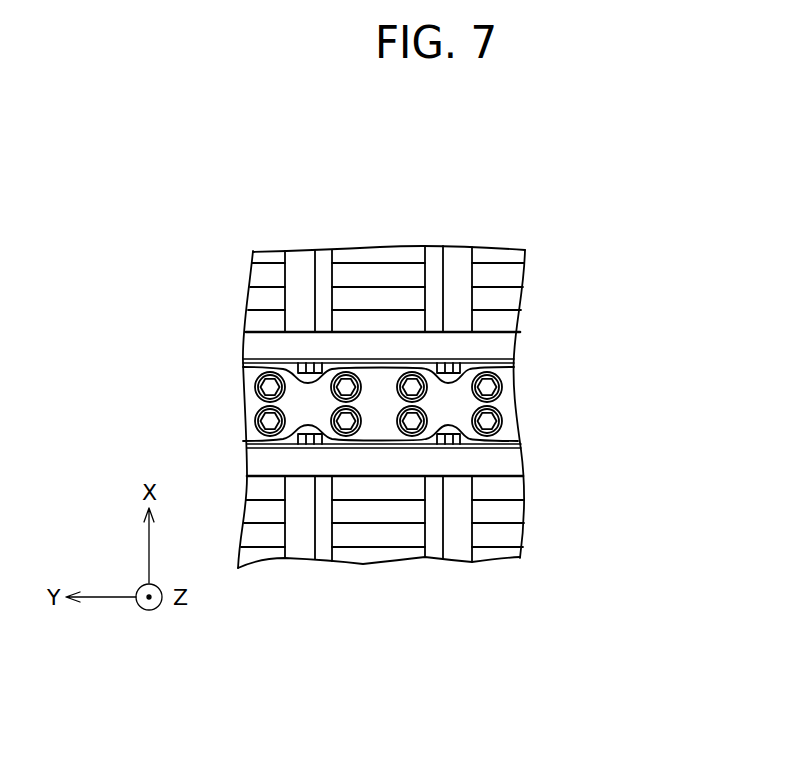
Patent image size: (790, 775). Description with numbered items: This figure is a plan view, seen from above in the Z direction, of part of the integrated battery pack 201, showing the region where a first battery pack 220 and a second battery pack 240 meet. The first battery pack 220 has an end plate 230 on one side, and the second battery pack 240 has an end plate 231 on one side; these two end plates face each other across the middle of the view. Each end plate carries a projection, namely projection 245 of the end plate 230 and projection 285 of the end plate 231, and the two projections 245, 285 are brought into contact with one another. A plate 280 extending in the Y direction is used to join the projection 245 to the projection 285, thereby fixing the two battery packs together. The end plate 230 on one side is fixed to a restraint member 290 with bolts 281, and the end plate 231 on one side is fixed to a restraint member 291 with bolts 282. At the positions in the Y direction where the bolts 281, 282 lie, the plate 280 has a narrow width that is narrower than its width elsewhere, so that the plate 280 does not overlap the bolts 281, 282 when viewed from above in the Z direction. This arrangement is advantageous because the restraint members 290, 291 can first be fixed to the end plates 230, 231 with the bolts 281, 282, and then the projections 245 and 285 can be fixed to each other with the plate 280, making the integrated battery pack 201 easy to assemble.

The integrated battery pack 201 is at (507, 237).
The second battery pack 240 is at (502, 277).
The first battery pack 220 is at (520, 528).
The restraint member 291 is at (300, 300).
The restraint member 290 is at (296, 531).
The end plate on one side of second battery pack 231 is at (398, 343).
The end plate on one side of first battery pack 230 is at (395, 470).
The bolt 282 is at (297, 365).
The projection of end plate on one side of second battery pack 285 is at (329, 363).
The bolt 281 is at (297, 440).
The plate 280 is at (508, 406).
The projection of end plate on one side of first battery pack 245 is at (329, 445).